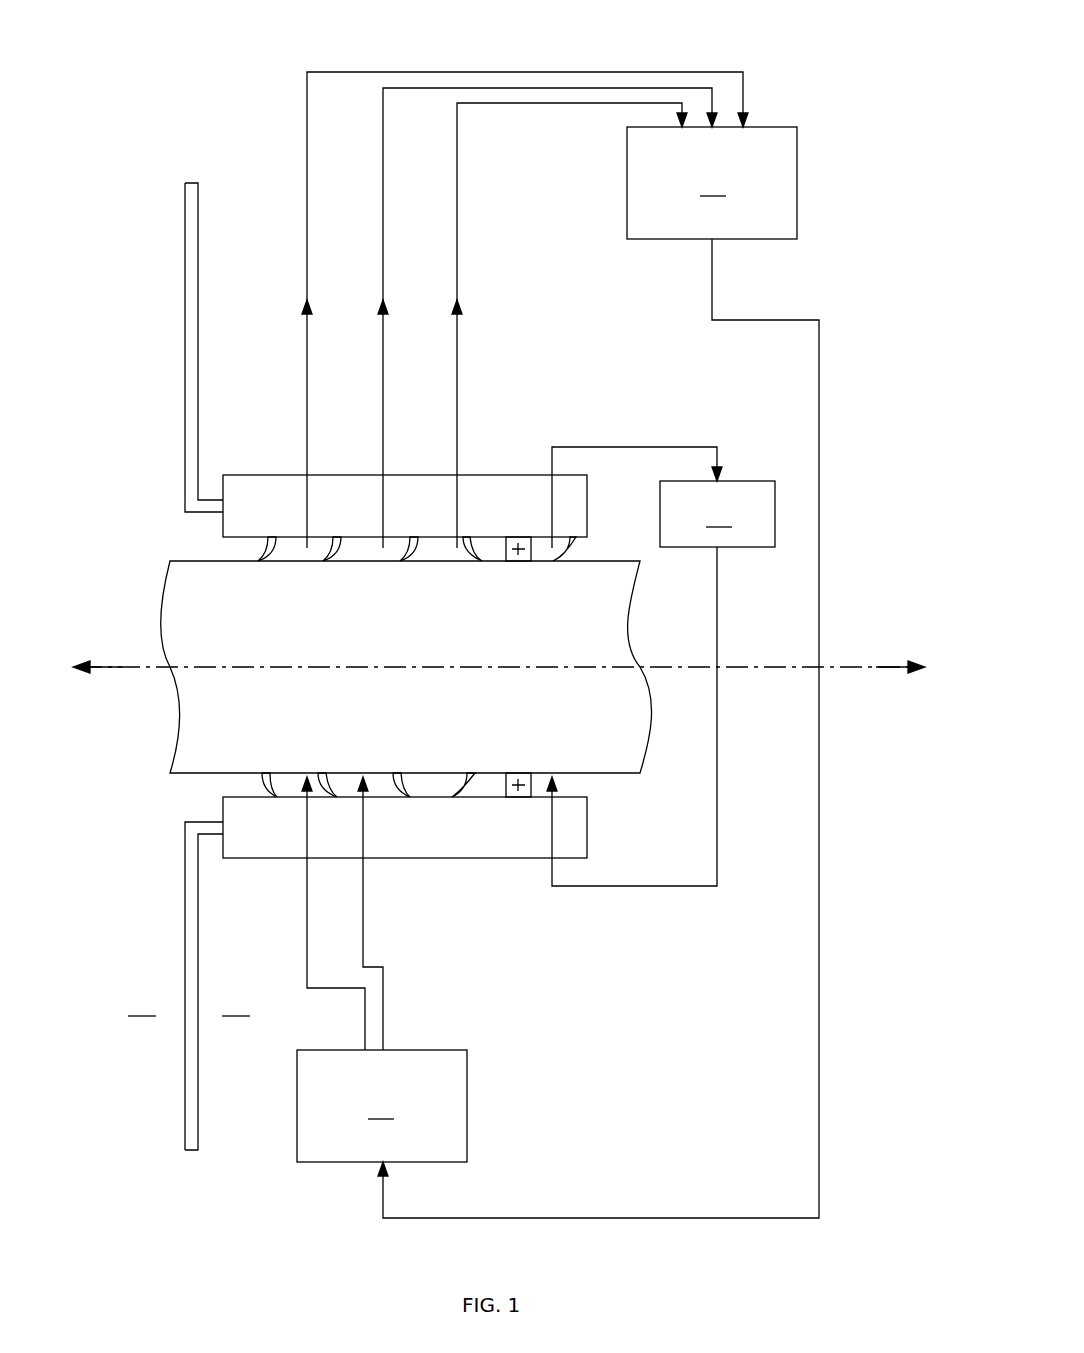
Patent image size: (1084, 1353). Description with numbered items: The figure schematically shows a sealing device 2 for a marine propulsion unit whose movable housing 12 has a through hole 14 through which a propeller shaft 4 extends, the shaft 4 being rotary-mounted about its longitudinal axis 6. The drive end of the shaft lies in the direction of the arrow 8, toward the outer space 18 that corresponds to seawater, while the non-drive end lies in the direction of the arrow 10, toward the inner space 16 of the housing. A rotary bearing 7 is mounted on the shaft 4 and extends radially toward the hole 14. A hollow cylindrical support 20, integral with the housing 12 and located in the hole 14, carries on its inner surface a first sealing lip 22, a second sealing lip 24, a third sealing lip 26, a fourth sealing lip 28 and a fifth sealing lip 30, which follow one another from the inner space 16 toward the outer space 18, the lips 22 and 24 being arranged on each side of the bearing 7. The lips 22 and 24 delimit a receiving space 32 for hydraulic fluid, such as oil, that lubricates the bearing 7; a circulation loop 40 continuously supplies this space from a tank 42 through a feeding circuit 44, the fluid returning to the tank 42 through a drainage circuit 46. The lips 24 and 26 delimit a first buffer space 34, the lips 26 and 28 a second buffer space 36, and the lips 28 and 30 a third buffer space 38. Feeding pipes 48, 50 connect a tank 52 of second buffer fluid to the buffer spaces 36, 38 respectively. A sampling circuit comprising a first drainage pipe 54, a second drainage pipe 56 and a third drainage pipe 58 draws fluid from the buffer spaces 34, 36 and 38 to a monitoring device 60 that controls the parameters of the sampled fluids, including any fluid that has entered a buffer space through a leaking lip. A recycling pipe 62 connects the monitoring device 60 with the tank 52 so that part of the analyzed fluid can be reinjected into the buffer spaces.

The sealing device 2 is at (668, 40).
The propeller shaft 4 is at (160, 612).
The longitudinal axis 6 is at (842, 666).
The rotary bearing 7 is at (500, 790).
The arrow 8 is at (102, 670).
The arrow 10 is at (890, 670).
The movable housing 12 is at (185, 276).
The through hole 14 is at (200, 512).
The inner space 16 is at (236, 1003).
The outer space 18 is at (142, 1003).
The support 20 is at (250, 838).
The first sealing lip 22 is at (578, 547).
The second sealing lip 24 is at (470, 545).
The third sealing lip 26 is at (412, 545).
The fourth sealing lip 28 is at (337, 545).
The fifth sealing lip 30 is at (270, 545).
The receiving space 32 is at (470, 790).
The first buffer space 34 is at (425, 790).
The second buffer space 36 is at (381, 790).
The third buffer space 38 is at (292, 790).
The circulation loop 40 is at (740, 850).
The tank 42 is at (717, 514).
The feeding circuit 44 is at (614, 886).
The drainage circuit 46 is at (592, 447).
The feeding pipe 48 is at (383, 1009).
The feeding pipe 50 is at (365, 1017).
The tank 52 is at (382, 1106).
The first drainage pipe 54 is at (457, 262).
The second drainage pipe 56 is at (383, 236).
The third drainage pipe 58 is at (307, 209).
The monitoring device 60 is at (712, 183).
The recycling pipe 62 is at (819, 447).